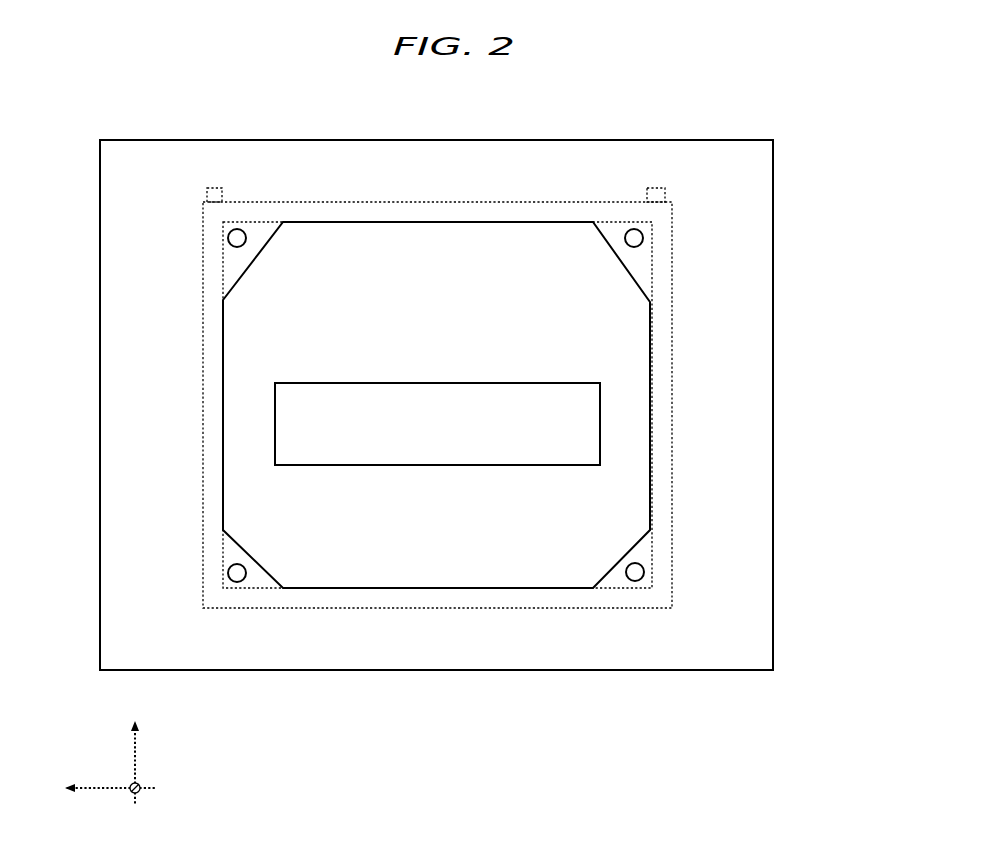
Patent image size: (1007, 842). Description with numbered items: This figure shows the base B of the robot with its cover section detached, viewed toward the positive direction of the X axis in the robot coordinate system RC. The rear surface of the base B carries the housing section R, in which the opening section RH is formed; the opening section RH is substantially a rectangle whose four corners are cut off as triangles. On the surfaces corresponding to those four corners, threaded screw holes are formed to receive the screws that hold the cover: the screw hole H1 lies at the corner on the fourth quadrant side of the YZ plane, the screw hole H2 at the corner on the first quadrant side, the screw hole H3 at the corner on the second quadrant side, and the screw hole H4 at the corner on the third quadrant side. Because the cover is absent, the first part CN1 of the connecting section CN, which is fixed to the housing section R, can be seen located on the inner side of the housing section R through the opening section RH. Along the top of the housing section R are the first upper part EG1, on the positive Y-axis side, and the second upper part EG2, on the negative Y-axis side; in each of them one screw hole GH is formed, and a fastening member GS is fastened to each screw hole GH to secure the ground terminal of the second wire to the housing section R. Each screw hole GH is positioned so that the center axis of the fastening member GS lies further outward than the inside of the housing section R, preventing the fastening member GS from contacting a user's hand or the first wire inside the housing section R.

The base B is at (775, 201).
The housing section R is at (672, 338).
The opening section RH is at (281, 305).
The connecting section CN is at (600, 420).
The first part CN1 is at (297, 430).
The screw hole H1 is at (643, 237).
The screw hole H2 is at (229, 241).
The screw hole H3 is at (229, 575).
The screw hole H4 is at (644, 570).
The fastening member GS is at (218, 189).
The screw hole GH is at (212, 206).
The first upper part EG1 is at (203, 196).
The second upper part EG2 is at (675, 194).
The robot coordinate system RC is at (127, 780).